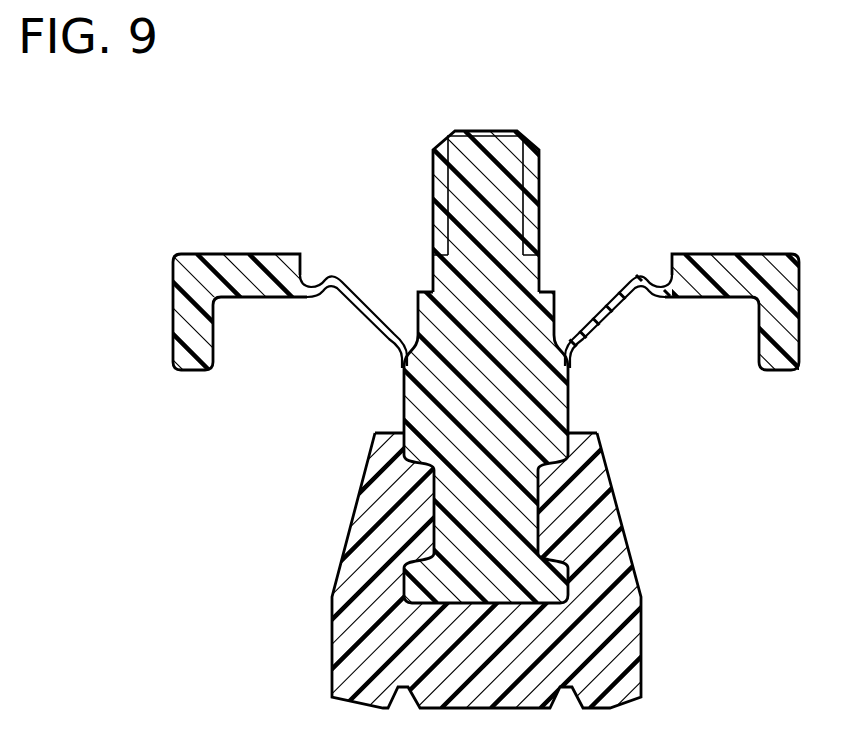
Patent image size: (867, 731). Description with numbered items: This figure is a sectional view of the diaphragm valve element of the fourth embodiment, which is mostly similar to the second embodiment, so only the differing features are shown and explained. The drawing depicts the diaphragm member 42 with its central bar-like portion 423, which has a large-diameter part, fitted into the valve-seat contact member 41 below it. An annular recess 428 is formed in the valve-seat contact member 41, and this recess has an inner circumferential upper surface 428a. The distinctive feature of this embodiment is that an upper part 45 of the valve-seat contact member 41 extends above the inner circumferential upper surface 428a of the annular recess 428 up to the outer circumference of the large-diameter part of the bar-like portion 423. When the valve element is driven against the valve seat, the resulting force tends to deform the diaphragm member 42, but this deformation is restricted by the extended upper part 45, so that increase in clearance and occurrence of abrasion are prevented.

The valve-seat contact member 41 is at (468, 419).
The diaphragm member 42 is at (433, 367).
The bar-like portion 423 is at (522, 393).
The upper part 45 is at (578, 435).
The annular recess 428 is at (537, 492).
The inner circumferential upper surface 428a is at (562, 470).